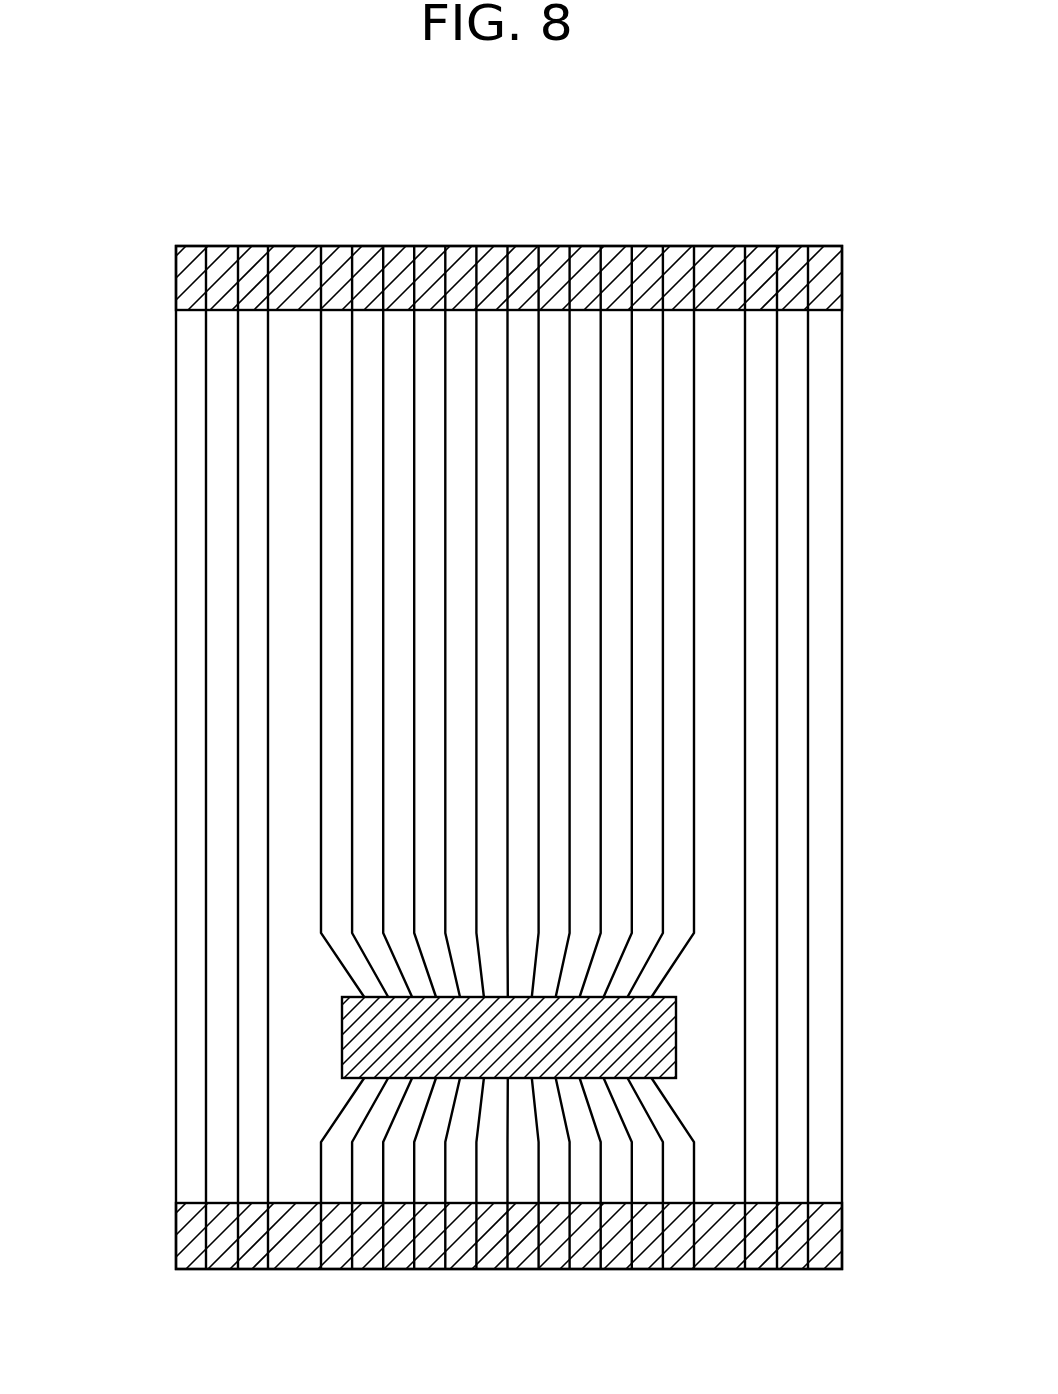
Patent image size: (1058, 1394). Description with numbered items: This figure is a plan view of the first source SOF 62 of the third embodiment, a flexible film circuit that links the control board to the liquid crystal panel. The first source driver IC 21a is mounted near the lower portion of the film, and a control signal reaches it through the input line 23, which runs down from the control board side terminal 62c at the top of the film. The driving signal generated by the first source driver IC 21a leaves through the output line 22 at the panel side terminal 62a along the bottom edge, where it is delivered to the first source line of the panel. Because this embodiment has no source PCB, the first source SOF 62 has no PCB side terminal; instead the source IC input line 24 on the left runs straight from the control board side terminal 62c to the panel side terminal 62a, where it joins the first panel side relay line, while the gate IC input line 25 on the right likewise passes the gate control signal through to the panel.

The first source SOF 62 is at (188, 1131).
The control board side terminal 62c is at (713, 255).
The panel side terminal 62a is at (293, 1252).
The source IC input line 24 is at (276, 232).
The input line 23 is at (695, 232).
The gate IC input line 25 is at (813, 232).
The output line 22 is at (702, 1282).
The first source driver IC 21a is at (342, 1033).